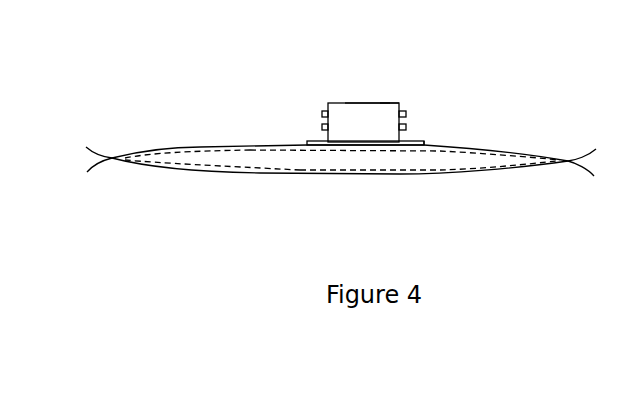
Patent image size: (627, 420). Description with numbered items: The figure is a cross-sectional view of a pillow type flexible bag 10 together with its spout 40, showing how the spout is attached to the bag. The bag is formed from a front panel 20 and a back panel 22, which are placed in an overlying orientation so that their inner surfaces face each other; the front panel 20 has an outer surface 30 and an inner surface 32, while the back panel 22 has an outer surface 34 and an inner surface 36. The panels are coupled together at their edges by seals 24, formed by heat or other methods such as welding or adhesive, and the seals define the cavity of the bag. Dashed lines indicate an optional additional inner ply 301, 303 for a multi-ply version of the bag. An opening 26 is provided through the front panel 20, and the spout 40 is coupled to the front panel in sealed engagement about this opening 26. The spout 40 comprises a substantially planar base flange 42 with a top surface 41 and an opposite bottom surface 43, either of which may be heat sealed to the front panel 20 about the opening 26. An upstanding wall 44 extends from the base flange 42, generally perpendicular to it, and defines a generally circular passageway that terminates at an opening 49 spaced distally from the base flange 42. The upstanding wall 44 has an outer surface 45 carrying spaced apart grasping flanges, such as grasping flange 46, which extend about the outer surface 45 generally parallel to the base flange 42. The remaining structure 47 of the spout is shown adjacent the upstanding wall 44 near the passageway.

The ophthalmic lens 10 is at (545, 157).
The front panel 20 is at (520, 153).
The back panel 22 is at (502, 173).
The seals 24 is at (570, 165).
The outer surface 30 is at (205, 145).
The additional inner ply 301 is at (258, 148).
The additional inner ply 303 is at (265, 168).
The inner surface 32 is at (183, 153).
The outer surface 34 is at (305, 176).
The inner surface 36 is at (358, 175).
The opening 26 is at (410, 149).
The spout 40 is at (423, 87).
The top surface 41 is at (310, 140).
The base flange 42 is at (425, 140).
The bottom surface 43 is at (331, 148).
The upstanding wall 44 is at (326, 107).
The outer surface 45 is at (408, 121).
The grasping flange 46 is at (403, 105).
The top surface 47 is at (355, 100).
The opening 49 is at (378, 96).